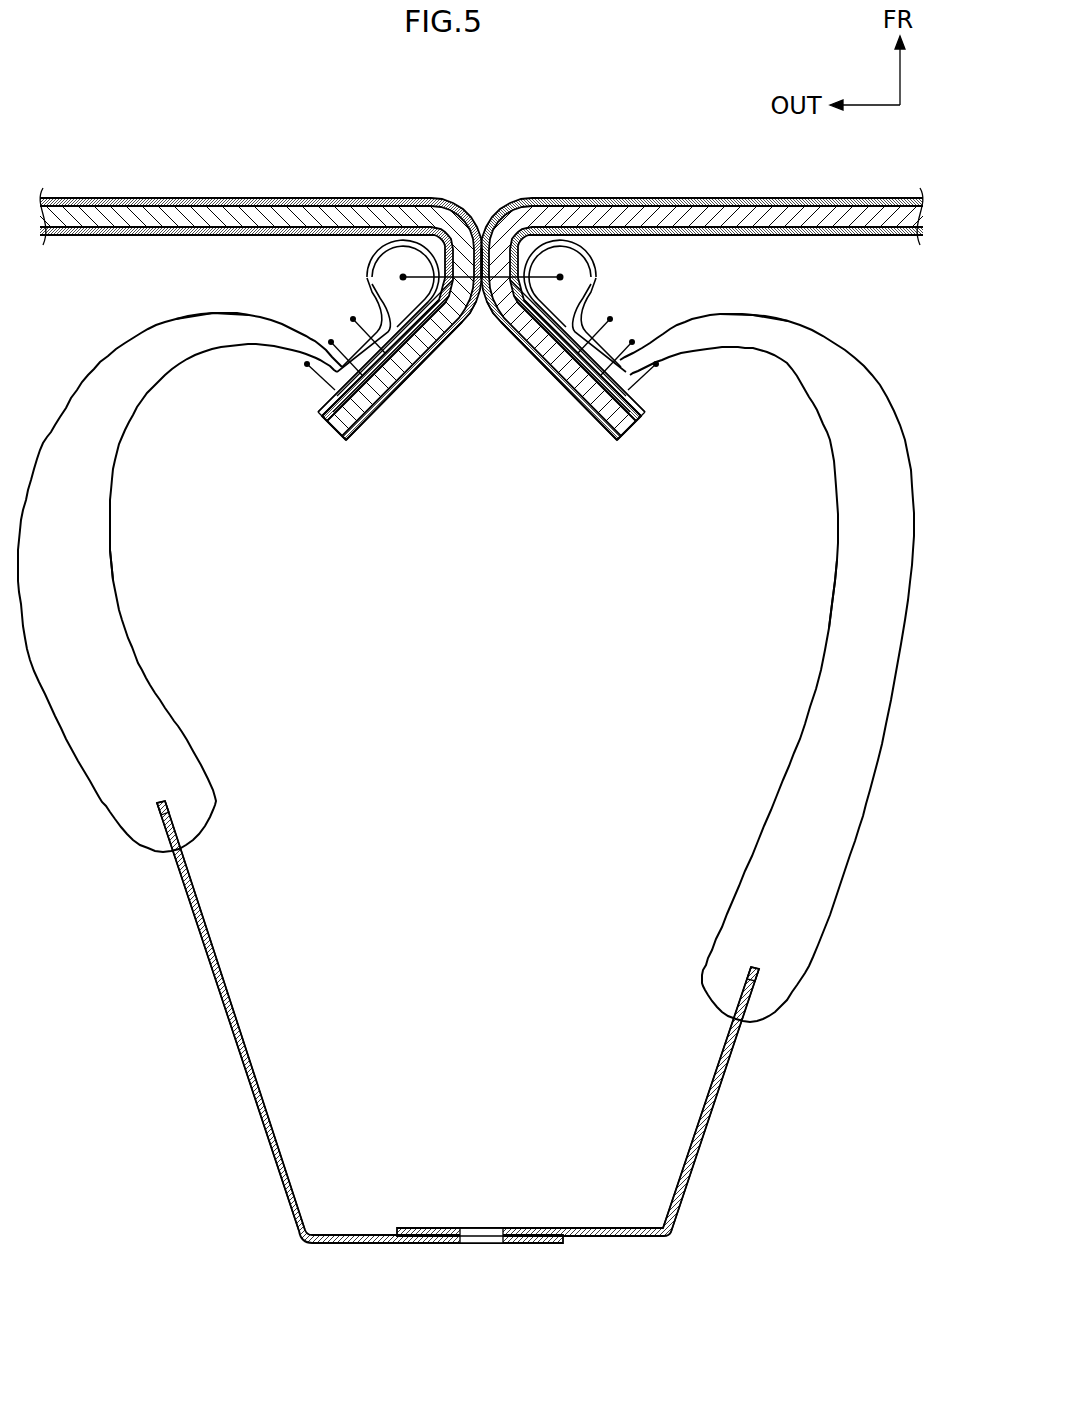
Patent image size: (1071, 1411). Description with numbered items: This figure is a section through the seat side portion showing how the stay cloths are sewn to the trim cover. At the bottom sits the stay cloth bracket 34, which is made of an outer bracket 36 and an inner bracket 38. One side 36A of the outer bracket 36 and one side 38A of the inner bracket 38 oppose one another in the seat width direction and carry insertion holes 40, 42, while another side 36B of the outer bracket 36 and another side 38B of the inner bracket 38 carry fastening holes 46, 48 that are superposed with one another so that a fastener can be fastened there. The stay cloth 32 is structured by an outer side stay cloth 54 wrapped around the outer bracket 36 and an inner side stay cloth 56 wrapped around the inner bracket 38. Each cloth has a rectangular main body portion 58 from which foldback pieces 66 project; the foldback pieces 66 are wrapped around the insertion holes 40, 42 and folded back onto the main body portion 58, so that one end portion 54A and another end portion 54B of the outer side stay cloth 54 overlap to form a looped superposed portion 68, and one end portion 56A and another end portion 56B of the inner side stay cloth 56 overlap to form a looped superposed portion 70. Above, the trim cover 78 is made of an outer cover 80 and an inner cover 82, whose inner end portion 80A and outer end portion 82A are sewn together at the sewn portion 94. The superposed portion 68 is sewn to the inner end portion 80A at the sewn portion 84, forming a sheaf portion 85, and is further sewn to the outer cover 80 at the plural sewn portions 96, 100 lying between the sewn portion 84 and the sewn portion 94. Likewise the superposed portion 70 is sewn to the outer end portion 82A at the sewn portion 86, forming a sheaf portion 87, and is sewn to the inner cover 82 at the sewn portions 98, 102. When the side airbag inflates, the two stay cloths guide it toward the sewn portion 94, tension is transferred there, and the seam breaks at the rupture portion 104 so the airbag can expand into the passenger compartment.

The stay cloth 32 is at (472, 631).
The stay cloth bracket 34 is at (458, 1059).
The outer bracket 36 is at (284, 1190).
The one side of the outer bracket 36A is at (233, 1040).
The another side of the outer bracket 36B is at (375, 1245).
The inner bracket 38 is at (680, 1200).
The one side of the inner bracket 38A is at (706, 1118).
The another side of the inner bracket 38B is at (612, 1238).
The insertion hole 40 is at (165, 856).
The insertion hole 42 is at (745, 1026).
The fastening hole 46 is at (472, 1244).
The fastening hole 48 is at (490, 1228).
The outer side stay cloth 54 is at (76, 382).
The one end portion of the outer side stay cloth 54A is at (312, 405).
The another end portion of the outer side stay cloth 54B is at (320, 418).
The inner side stay cloth 56 is at (830, 333).
The one end portion of the inner side stay cloth 56A is at (651, 405).
The another end portion of the inner side stay cloth 56B is at (643, 418).
The main body portion 58 is at (203, 313).
The foldback pieces 66 is at (113, 561).
The superposed portion 68 is at (358, 352).
The superposed portion 70 is at (605, 352).
The trim cover 78 is at (481, 319).
The outer cover 80 is at (232, 218).
The inner end portion of the outer cover 80A is at (337, 432).
The inner cover 82 is at (665, 218).
The outer end portion of the inner cover 82A is at (626, 432).
The sewn portion 84 is at (358, 410).
The sheaf portion 85 is at (447, 352).
The sewn portion 86 is at (605, 410).
The sheaf portion 87 is at (497, 352).
The sewn portion 94 is at (548, 272).
The sewn portion 96 is at (382, 387).
The sewn portion 98 is at (581, 387).
The sewn portion 100 is at (402, 367).
The sewn portion 102 is at (561, 367).
The rupture portion 104 is at (483, 268).